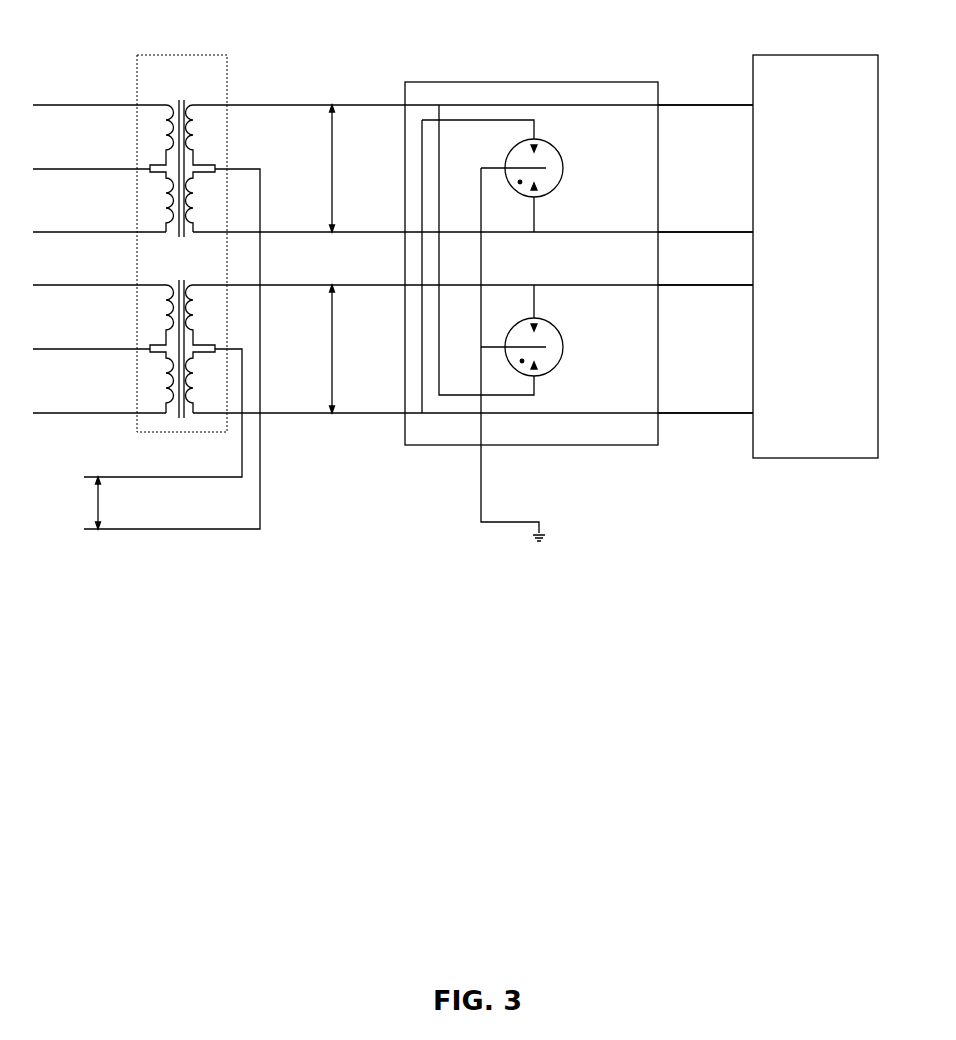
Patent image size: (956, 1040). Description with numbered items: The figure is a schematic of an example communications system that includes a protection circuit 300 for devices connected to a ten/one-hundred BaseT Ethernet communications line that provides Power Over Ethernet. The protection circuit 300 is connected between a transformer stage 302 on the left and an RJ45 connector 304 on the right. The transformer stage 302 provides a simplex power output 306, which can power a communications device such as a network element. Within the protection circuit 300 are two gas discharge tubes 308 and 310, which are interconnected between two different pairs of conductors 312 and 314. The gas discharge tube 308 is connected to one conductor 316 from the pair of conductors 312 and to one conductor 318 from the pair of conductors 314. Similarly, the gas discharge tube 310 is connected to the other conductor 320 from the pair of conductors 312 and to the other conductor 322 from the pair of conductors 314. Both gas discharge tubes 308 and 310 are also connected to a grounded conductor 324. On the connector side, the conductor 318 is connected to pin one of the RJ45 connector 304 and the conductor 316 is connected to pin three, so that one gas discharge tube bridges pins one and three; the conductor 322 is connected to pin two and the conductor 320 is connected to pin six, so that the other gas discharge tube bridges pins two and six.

The protection circuit 300 is at (531, 295).
The transformer stage 302 is at (175, 55).
The RJ45 connector 304 is at (803, 55).
The simplex power output 306 is at (72, 535).
The gas discharge tube 308 is at (562, 348).
The gas discharge tube 310 is at (562, 163).
The pair of conductors 312 is at (332, 352).
The pair of conductors 314 is at (332, 172).
The conductor 316 is at (682, 284).
The conductor 318 is at (682, 104).
The conductor 320 is at (682, 412).
The conductor 322 is at (682, 231).
The grounded conductor 324 is at (481, 470).